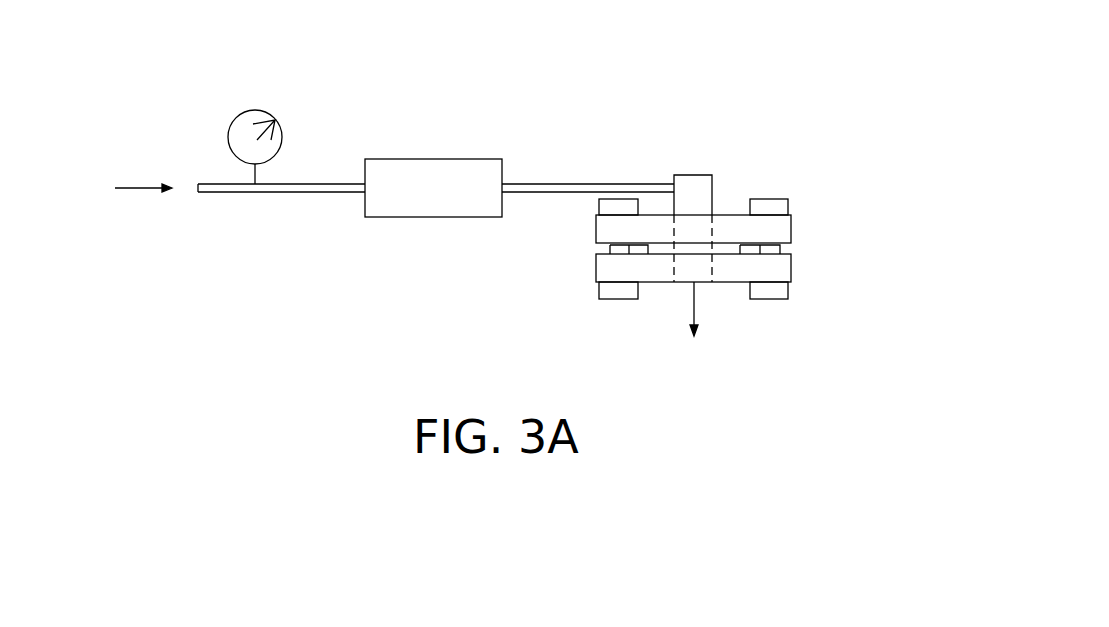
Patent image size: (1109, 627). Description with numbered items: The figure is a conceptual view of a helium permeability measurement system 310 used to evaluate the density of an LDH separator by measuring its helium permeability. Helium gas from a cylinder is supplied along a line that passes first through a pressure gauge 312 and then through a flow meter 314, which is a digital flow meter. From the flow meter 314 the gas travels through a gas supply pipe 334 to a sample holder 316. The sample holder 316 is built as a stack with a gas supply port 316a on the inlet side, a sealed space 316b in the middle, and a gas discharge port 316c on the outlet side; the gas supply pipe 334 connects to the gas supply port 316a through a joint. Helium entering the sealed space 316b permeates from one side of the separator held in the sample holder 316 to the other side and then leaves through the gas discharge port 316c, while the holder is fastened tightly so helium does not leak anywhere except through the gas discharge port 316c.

The helium permeability measurement system 310 is at (737, 60).
The pressure gauge 312 is at (245, 116).
The flow meter 314 is at (441, 181).
The gas supply pipe 334 is at (554, 183).
The sample holder 316 is at (767, 152).
The gas supply port 316a is at (713, 231).
The sealed space 316b is at (700, 251).
The gas discharge port 316c is at (713, 267).